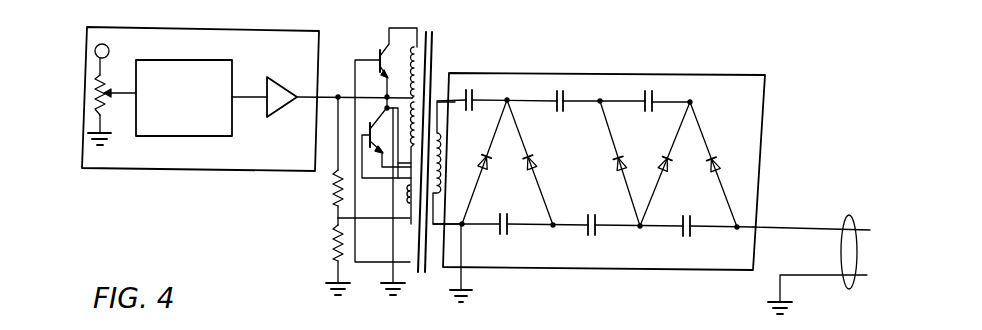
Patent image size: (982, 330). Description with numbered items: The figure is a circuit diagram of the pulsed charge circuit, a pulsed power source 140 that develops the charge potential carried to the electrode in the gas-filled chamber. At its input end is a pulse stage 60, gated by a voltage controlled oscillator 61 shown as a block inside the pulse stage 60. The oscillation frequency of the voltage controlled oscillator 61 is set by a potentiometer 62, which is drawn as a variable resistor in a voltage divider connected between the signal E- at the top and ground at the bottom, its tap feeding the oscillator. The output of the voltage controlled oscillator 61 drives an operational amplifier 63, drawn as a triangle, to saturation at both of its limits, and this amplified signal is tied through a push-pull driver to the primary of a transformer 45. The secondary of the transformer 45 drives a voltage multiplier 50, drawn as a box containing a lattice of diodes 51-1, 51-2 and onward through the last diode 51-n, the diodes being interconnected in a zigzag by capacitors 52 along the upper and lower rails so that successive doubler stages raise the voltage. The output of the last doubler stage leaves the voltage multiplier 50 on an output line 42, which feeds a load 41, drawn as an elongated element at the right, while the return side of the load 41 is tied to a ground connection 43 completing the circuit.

The pulsed power source 140 is at (270, 250).
The pulse stage 60 is at (136, 176).
The voltage controlled oscillator 61 is at (217, 60).
The potentiometer 62 is at (84, 96).
The operational amplifier 63 is at (274, 110).
The positive signal E- is at (103, 44).
The transformer 45 is at (442, 54).
The voltage multiplier 50 is at (599, 196).
The diode 51-1 is at (487, 166).
The diode 51-2 is at (527, 157).
The nth diode 51-n is at (712, 158).
The capacitors 52 is at (470, 110).
The high voltage output line 42 is at (791, 229).
The load (electrode) 41 is at (848, 215).
The ground connection 43 is at (800, 276).